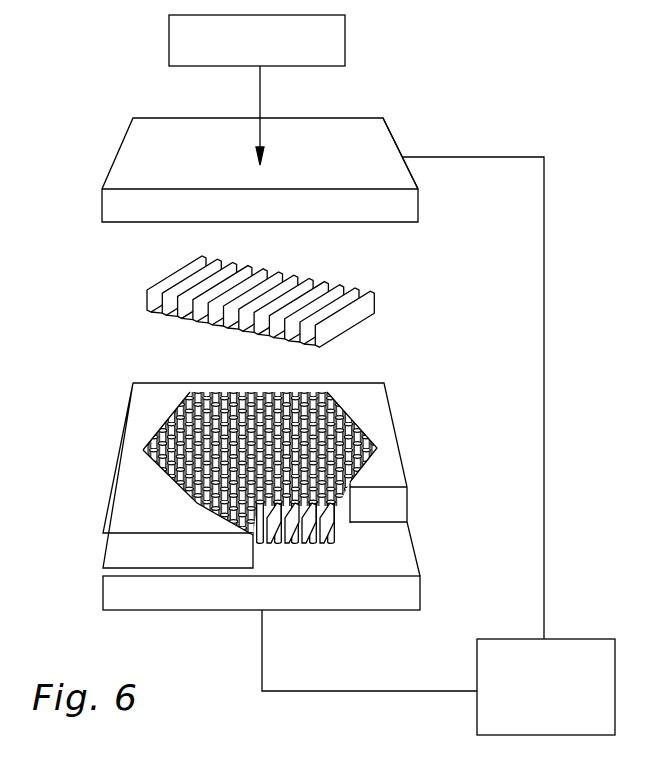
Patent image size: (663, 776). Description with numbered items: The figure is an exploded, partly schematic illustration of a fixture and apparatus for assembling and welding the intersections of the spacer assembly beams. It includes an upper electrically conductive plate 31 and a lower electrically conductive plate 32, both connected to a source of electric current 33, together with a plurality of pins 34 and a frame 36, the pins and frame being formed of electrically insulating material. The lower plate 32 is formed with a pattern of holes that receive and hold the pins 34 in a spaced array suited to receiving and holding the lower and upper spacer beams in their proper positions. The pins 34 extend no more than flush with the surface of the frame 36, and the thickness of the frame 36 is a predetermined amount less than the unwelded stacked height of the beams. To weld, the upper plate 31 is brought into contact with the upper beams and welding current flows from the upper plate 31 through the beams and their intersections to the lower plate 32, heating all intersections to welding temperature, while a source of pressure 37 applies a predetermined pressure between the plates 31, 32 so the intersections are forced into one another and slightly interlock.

The source of pressure 37 is at (345, 42).
The upper electrically conductive plate 31 is at (397, 143).
The frame 36 is at (113, 483).
The pins 34 is at (370, 437).
The lower electrically conductive plate 32 is at (103, 597).
The source of electric current 33 is at (477, 710).